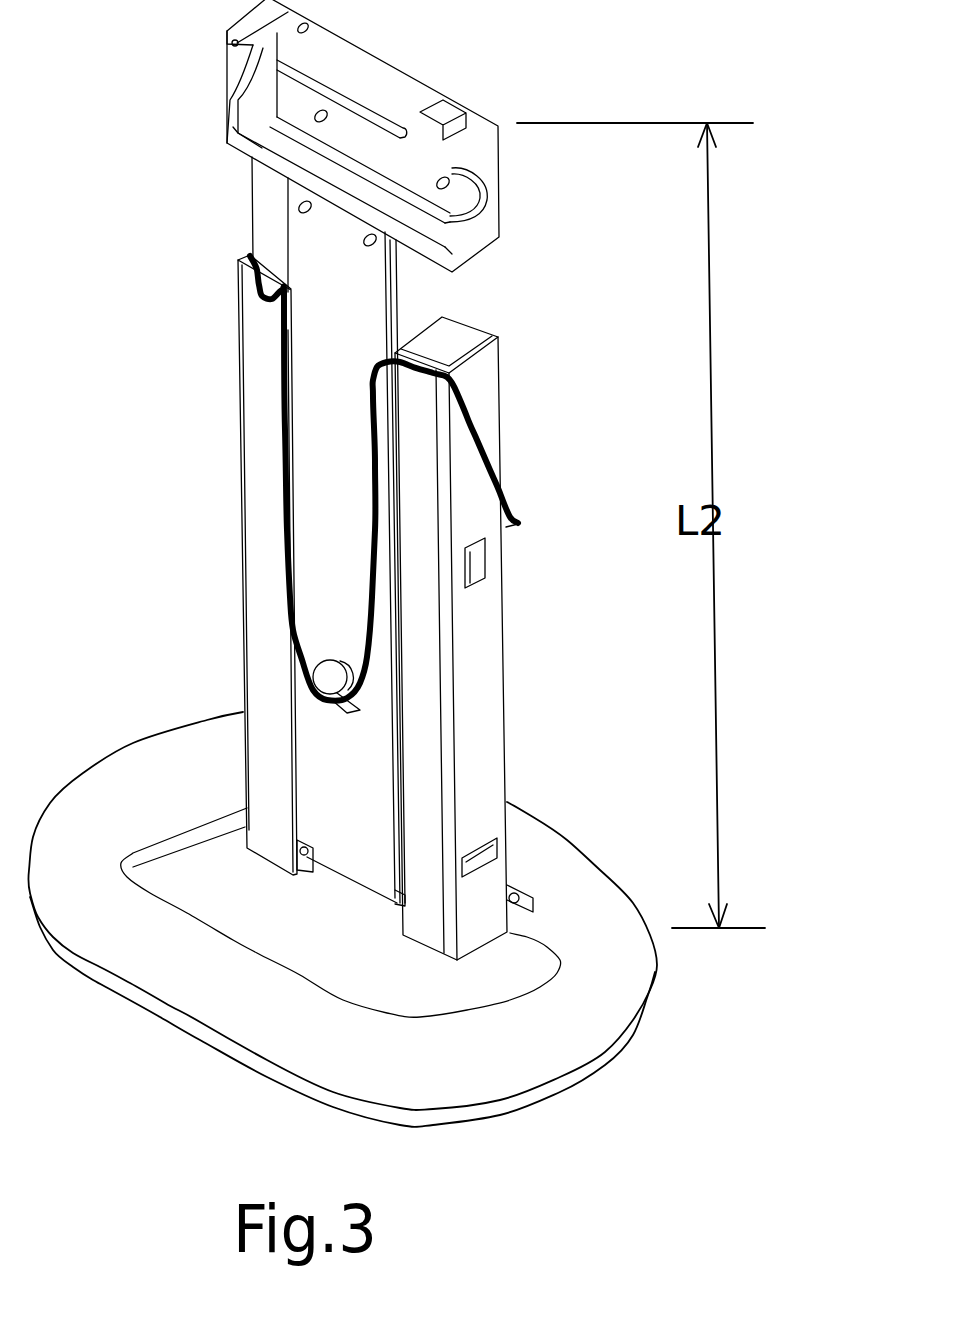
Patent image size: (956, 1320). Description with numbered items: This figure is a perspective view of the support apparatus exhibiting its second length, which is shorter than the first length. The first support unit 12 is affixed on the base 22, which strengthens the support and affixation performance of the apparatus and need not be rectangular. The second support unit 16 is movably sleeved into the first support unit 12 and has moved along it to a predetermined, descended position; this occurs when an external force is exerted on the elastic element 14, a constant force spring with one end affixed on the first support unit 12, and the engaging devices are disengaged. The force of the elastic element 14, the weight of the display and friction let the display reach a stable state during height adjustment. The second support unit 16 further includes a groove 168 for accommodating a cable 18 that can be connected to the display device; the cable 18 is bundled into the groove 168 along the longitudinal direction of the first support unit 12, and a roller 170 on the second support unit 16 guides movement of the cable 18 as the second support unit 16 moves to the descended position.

The first support unit 12 is at (258, 513).
The elastic element 14 is at (347, 875).
The second support unit 16 is at (303, 230).
The cable 18 is at (477, 417).
The base 22 is at (635, 1025).
The groove 168 is at (272, 242).
The roller 170 is at (330, 677).